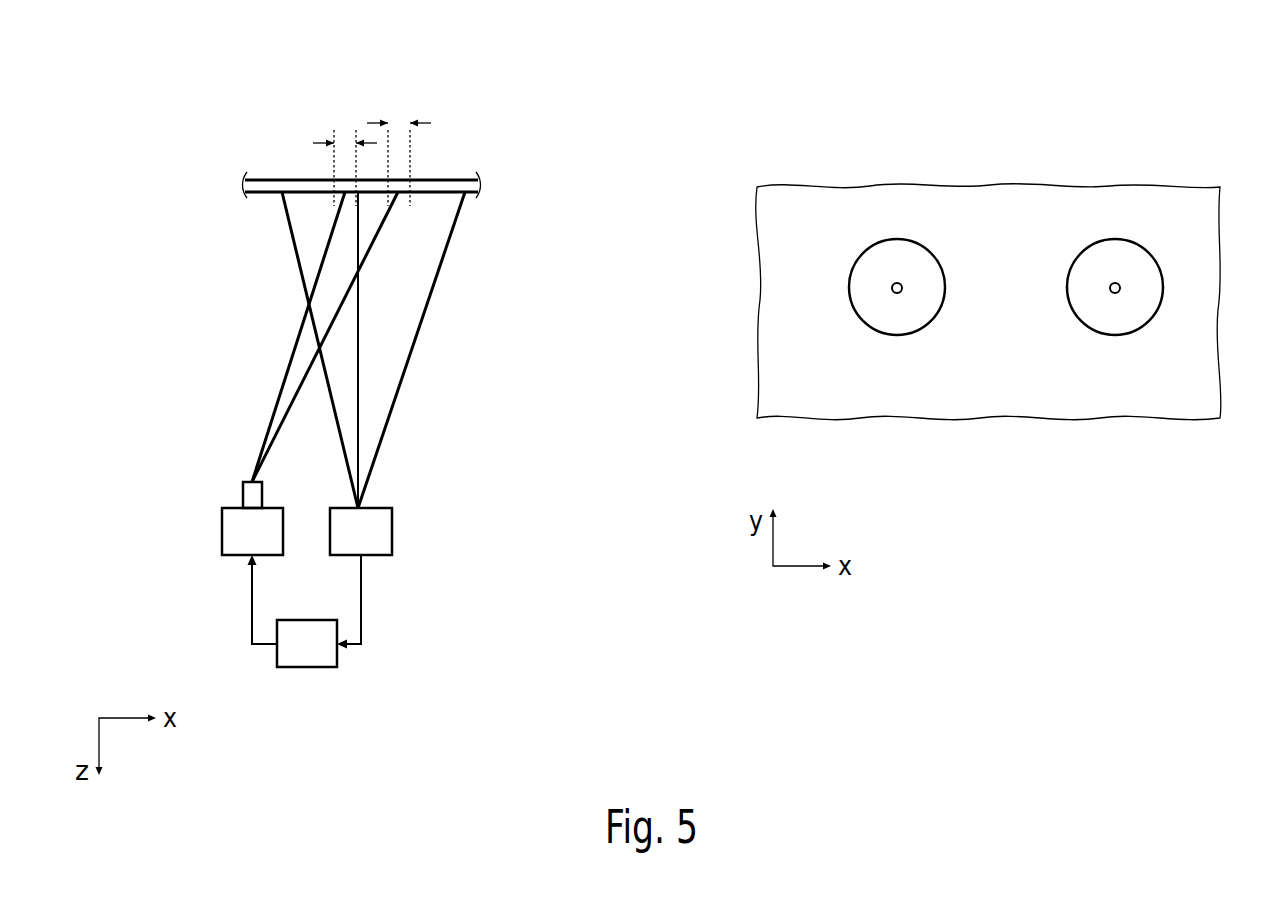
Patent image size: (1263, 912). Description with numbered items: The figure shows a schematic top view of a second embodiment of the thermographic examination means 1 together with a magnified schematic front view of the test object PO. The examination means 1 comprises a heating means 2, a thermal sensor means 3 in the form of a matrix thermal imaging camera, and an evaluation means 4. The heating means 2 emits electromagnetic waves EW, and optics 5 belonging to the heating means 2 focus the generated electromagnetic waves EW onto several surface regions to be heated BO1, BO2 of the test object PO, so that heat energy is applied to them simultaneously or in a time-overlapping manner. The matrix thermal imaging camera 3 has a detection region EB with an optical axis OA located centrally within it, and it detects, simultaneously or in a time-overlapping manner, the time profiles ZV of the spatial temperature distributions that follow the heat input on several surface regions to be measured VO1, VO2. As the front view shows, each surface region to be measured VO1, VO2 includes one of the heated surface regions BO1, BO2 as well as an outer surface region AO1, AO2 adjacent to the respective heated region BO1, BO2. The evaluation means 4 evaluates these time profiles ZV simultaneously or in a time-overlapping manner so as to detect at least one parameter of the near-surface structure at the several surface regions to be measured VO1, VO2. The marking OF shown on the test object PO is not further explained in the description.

The thermographic examination means 1 is at (118, 84).
The heating means 2 is at (222, 523).
The thermal sensor means 3 is at (392, 535).
The evaluation means 4 is at (306, 667).
The optics 5 is at (242, 497).
The test object PO is at (445, 177).
The object surface OF is at (254, 198).
The first surface region to be measured VO1 is at (963, 353).
The second surface region to be measured VO2 is at (1181, 353).
The first surface region to be heated BO1 is at (345, 196).
The second surface region to be heated BO2 is at (400, 195).
The detection region EB is at (301, 284).
The electromagnetic waves EW is at (296, 348).
The optical axis OA is at (360, 341).
The time profile ZV is at (361, 598).
The first outer surface region AO1 is at (920, 258).
The second outer surface region AO2 is at (1135, 258).